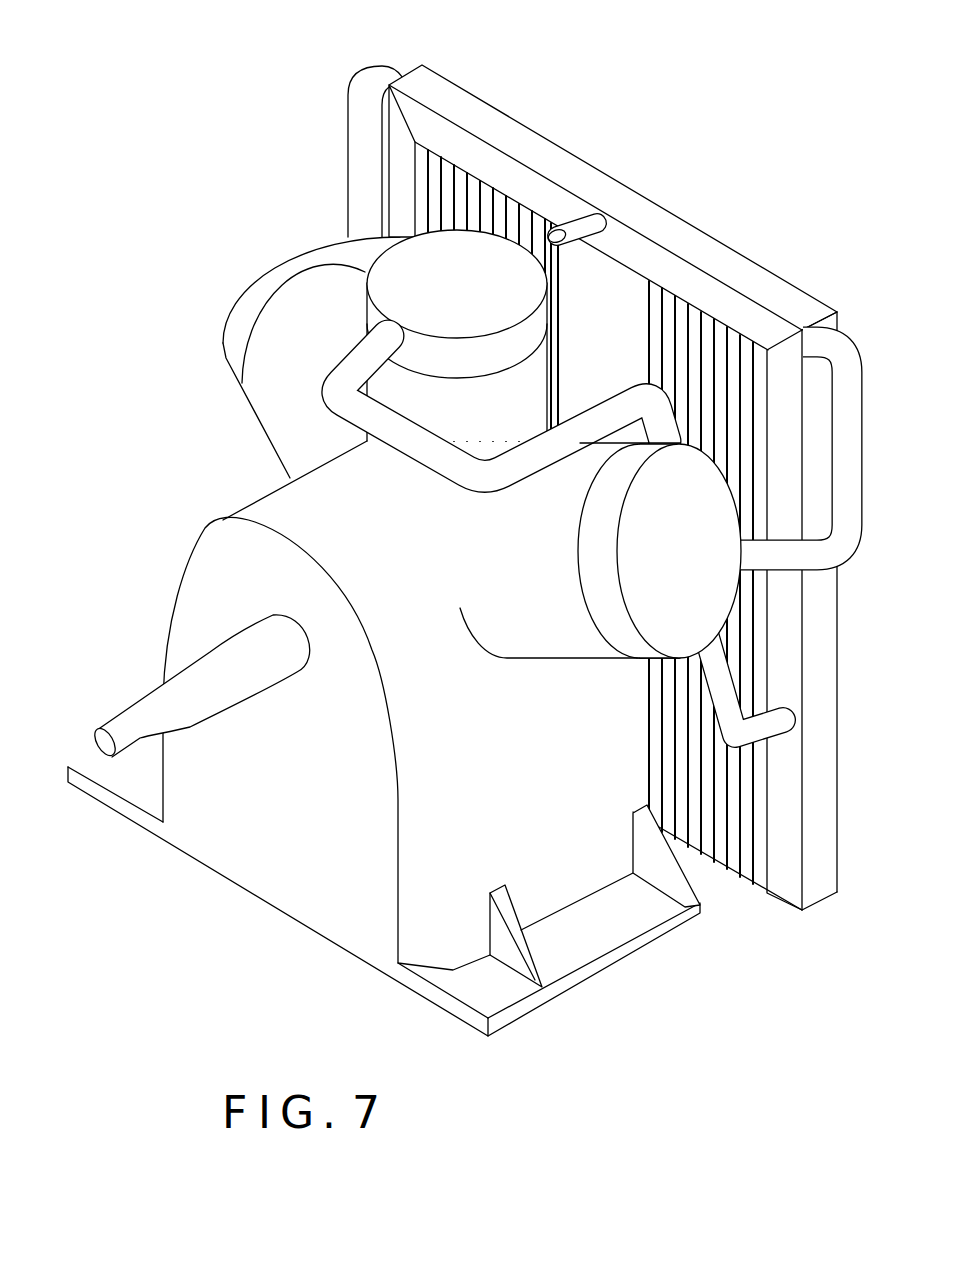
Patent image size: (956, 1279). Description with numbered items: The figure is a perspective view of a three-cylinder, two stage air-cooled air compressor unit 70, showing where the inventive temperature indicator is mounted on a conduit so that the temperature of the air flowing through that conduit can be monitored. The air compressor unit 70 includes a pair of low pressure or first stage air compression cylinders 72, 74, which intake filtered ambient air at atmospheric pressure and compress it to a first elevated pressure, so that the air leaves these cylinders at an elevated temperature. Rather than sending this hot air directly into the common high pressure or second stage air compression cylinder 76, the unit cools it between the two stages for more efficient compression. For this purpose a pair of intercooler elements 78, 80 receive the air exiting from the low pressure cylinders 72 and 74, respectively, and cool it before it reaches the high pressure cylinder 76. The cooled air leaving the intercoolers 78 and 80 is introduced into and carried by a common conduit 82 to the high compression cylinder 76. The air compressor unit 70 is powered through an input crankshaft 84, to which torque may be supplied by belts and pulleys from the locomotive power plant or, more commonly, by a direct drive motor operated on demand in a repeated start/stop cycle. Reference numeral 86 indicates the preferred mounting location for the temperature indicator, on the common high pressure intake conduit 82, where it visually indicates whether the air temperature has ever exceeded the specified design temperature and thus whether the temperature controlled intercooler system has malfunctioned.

The air compressor unit 70 is at (217, 893).
The low pressure air compression cylinder 72 is at (266, 289).
The low pressure air compression cylinder 74 is at (640, 652).
The high pressure air compression cylinder 76 is at (523, 333).
The intercooler element 78 is at (461, 182).
The intercooler element 80 is at (720, 352).
The common conduit 82 is at (589, 233).
The input crankshaft 84 is at (176, 698).
The mounting location 86 is at (547, 233).